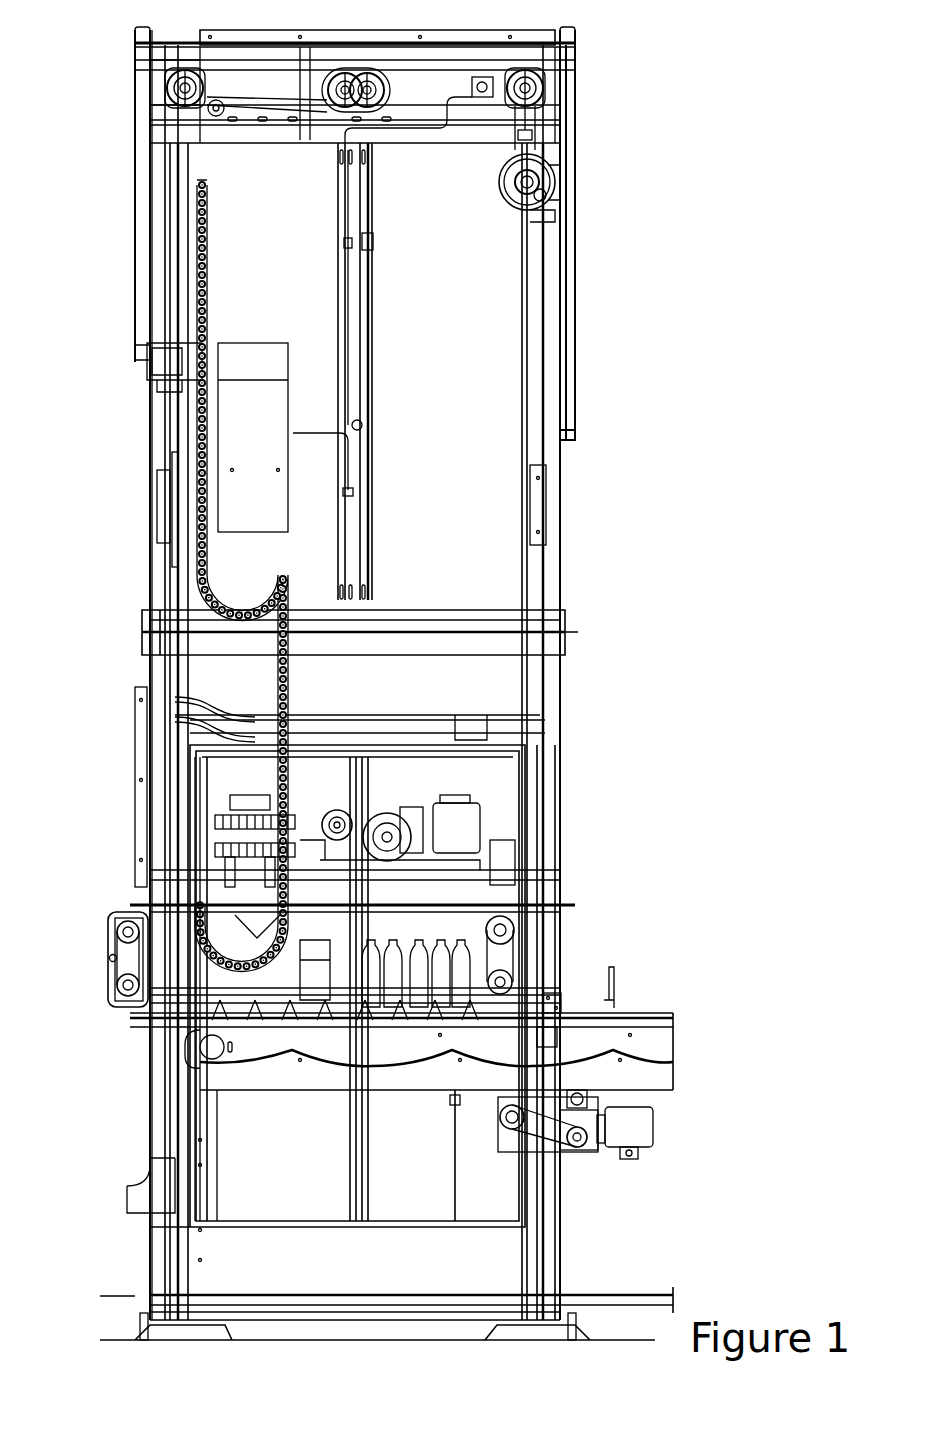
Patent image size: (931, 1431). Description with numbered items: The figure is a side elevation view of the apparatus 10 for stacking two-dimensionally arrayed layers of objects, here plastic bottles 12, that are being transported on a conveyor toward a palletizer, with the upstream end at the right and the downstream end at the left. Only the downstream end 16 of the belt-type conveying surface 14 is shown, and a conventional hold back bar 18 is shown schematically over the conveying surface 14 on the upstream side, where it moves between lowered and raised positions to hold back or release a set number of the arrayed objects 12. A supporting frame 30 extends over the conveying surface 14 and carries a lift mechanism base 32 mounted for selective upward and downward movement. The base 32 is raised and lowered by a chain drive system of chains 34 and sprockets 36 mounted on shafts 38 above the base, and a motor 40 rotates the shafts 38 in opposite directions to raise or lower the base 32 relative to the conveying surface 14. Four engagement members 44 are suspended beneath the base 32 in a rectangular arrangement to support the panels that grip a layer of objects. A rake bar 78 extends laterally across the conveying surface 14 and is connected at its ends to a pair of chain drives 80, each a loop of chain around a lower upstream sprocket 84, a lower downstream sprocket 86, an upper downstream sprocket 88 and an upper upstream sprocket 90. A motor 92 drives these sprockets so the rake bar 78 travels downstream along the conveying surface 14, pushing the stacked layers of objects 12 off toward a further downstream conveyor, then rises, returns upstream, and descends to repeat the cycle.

The apparatus 10 is at (592, 372).
The plastic bottles 12 is at (500, 890).
The conveying surface 14 is at (655, 1012).
The downstream end 16 is at (180, 1045).
The hold back bar 18 is at (622, 975).
The supporting frame 30 is at (160, 597).
The lift mechanism base 32 is at (488, 860).
The chains 34 is at (165, 222).
The sprockets 36 is at (185, 88).
The shafts 38 is at (165, 88).
The motor 40 is at (547, 155).
The engagement members 44 is at (250, 925).
The rake bar 78 is at (110, 960).
The chain drives 80 is at (108, 940).
The lower upstream sprocket 84 is at (520, 988).
The lower downstream sprocket 86 is at (110, 990).
The upper downstream sprocket 88 is at (112, 922).
The upper upstream sprocket 90 is at (450, 957).
The motor 92 is at (628, 1120).